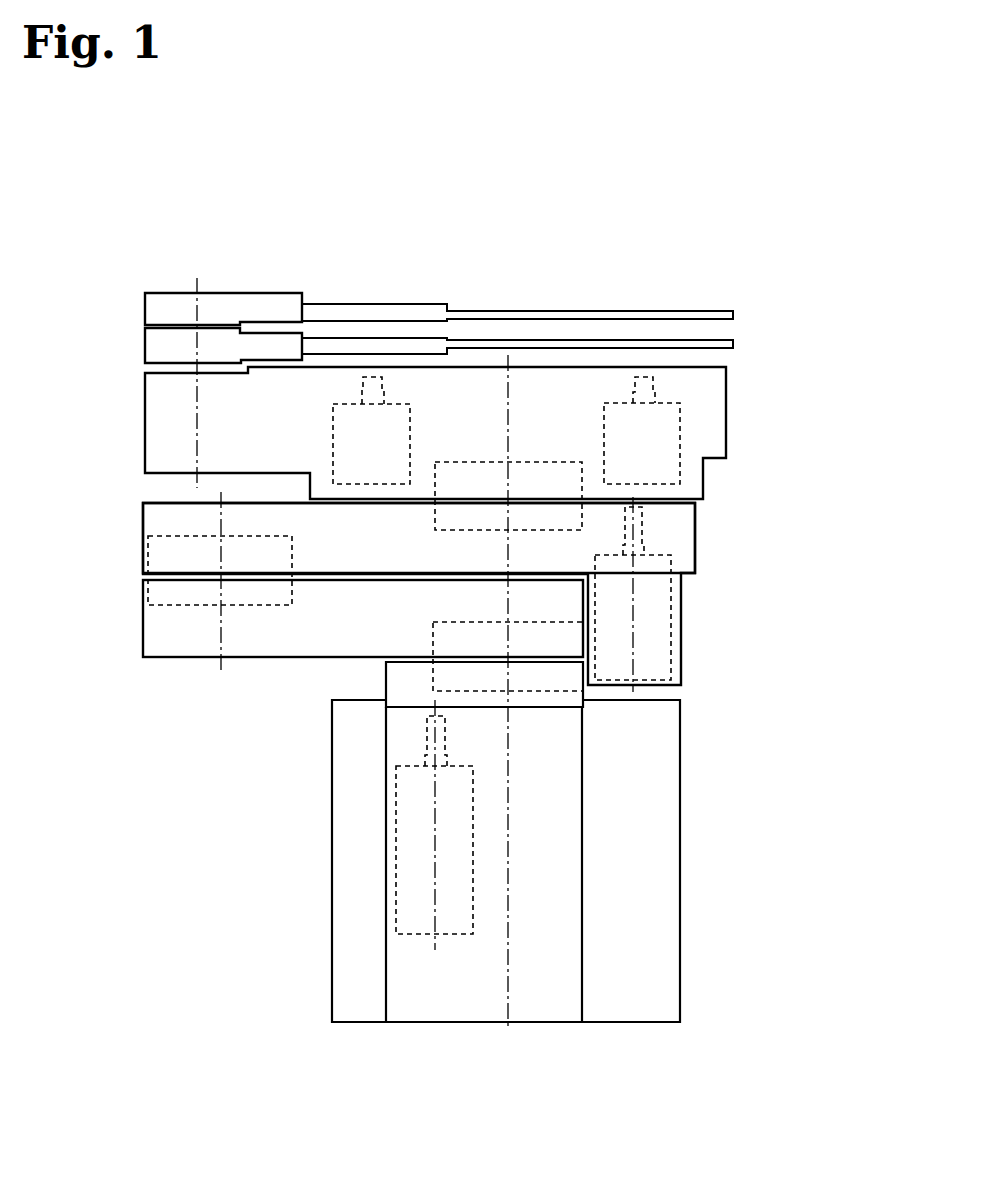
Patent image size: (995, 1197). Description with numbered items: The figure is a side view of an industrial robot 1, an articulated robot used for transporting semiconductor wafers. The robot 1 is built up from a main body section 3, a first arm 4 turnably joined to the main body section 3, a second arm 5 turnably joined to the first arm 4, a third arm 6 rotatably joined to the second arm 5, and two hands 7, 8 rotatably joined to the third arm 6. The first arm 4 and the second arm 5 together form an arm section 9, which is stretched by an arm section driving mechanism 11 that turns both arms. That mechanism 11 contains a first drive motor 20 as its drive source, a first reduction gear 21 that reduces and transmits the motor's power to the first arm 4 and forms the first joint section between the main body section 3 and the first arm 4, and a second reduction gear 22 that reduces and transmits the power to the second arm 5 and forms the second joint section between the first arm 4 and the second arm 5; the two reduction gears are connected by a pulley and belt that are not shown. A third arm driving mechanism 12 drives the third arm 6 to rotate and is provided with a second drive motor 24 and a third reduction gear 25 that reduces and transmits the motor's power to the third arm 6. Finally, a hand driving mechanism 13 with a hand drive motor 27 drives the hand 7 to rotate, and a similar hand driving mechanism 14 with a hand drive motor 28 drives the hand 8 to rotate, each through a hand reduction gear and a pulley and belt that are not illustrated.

The industrial robot 1 is at (706, 150).
The main body section 3 is at (681, 834).
The first arm 4 is at (341, 618).
The second arm 5 is at (143, 528).
The third arm 6 is at (143, 427).
The hand 7 is at (407, 303).
The hand 8 is at (350, 337).
The arm section 9 is at (377, 580).
The arm section driving mechanism 11 is at (307, 699).
The third arm driving mechanism 12 is at (722, 523).
The hand driving mechanism 13 is at (361, 430).
The hand driving mechanism 14 is at (661, 430).
The first drive motor 20 is at (396, 852).
The first reduction gear 21 is at (433, 640).
The second reduction gear 22 is at (293, 552).
The second drive motor 24 is at (673, 630).
The third reduction gear 25 is at (536, 462).
The hand drive motor 27 is at (411, 414).
The hand drive motor 28 is at (603, 418).